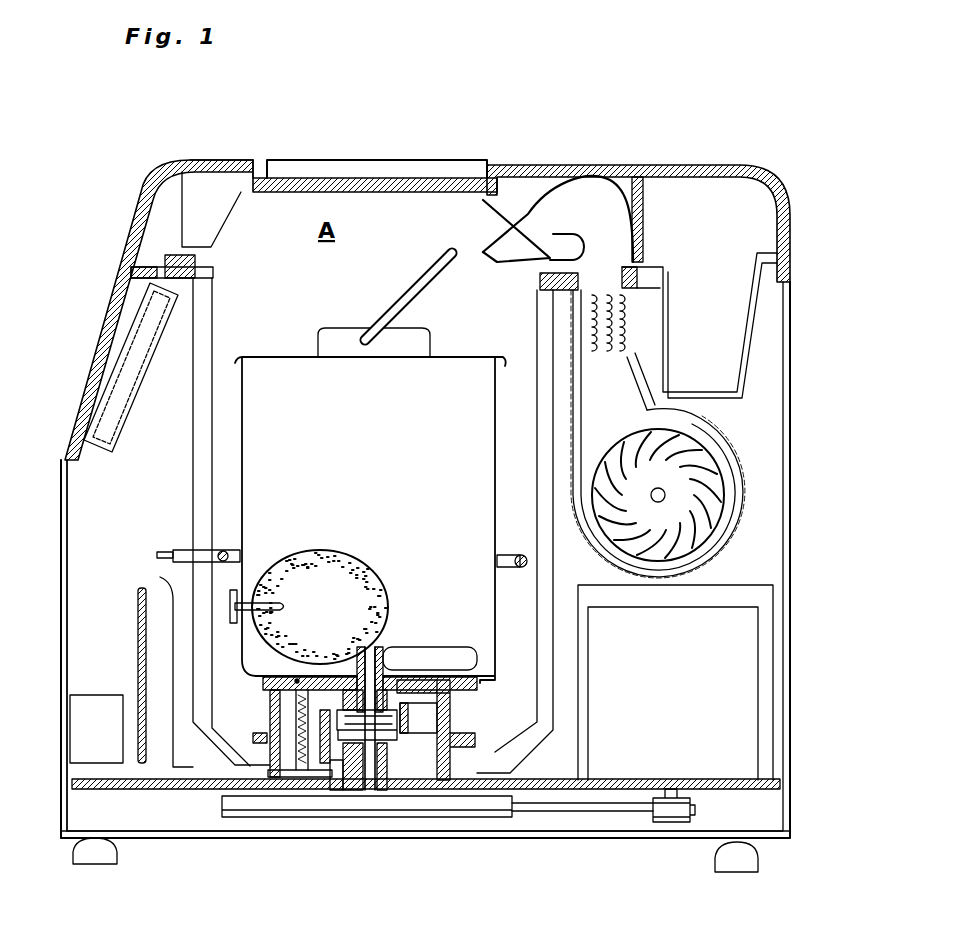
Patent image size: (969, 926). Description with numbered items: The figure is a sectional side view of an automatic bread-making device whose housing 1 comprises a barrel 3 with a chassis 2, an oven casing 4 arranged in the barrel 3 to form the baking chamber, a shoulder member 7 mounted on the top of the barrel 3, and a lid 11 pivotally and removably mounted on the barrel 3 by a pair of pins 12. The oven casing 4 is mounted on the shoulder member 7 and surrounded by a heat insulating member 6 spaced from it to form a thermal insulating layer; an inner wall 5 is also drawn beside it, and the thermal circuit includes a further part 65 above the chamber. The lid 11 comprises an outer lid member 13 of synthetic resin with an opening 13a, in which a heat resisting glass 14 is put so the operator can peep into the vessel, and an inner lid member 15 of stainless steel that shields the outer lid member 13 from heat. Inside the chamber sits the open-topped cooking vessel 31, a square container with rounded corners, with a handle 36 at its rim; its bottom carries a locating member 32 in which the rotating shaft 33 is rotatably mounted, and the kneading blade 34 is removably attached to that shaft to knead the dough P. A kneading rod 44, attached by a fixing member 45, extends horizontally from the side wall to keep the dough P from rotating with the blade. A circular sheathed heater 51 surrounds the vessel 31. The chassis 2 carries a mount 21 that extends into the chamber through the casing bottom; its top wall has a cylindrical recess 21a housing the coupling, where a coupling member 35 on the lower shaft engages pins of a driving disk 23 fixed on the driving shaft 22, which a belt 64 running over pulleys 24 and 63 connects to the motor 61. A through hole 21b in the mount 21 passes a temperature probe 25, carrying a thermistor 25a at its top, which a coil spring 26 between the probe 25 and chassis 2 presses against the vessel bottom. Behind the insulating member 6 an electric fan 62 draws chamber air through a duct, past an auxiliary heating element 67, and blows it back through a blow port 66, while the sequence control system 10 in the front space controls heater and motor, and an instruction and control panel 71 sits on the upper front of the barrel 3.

The housing 1 is at (695, 160).
The chassis 2 is at (233, 768).
The barrel 3 is at (62, 547).
The oven casing 4 is at (213, 308).
The partition wall 5 is at (202, 425).
The heat insulating member 6 is at (195, 483).
The shoulder member 7 is at (178, 255).
The sequence control system 10 is at (137, 630).
The lid 11 is at (218, 152).
The pins 12 is at (622, 180).
The outer lid member 13 is at (152, 182).
The opening 13a is at (277, 167).
The heat resisting glass 14 is at (388, 180).
The inner lid member 15 is at (233, 213).
The mount 21 is at (448, 753).
The cylindrical recess 21a is at (340, 792).
The through hole 21b is at (426, 795).
The driving shaft 22 is at (387, 797).
The driving disk 23 is at (403, 723).
The pulley 24 is at (467, 820).
The temperature probe 25 is at (295, 787).
The thermistor 25a is at (297, 678).
The coil spring 26 is at (277, 712).
The cooking vessel 31 is at (453, 357).
The locating member 32 is at (267, 693).
The rotating shaft 33 is at (397, 647).
The kneading blade 34 is at (453, 653).
The coupling member 35 is at (453, 700).
The handle 36 is at (412, 285).
The kneading rod 44 is at (275, 607).
The fixing member 45 is at (250, 553).
The heater 51 is at (523, 557).
The motor 61 is at (760, 640).
The electric fan 62 is at (712, 467).
The pulley 63 is at (665, 823).
The belt 64 is at (570, 812).
The exhaust hood 65 is at (533, 193).
The blow port 66 is at (483, 257).
The auxiliary heating element 67 is at (578, 320).
The instruction and control panel 71 is at (97, 347).
The dough P is at (380, 585).